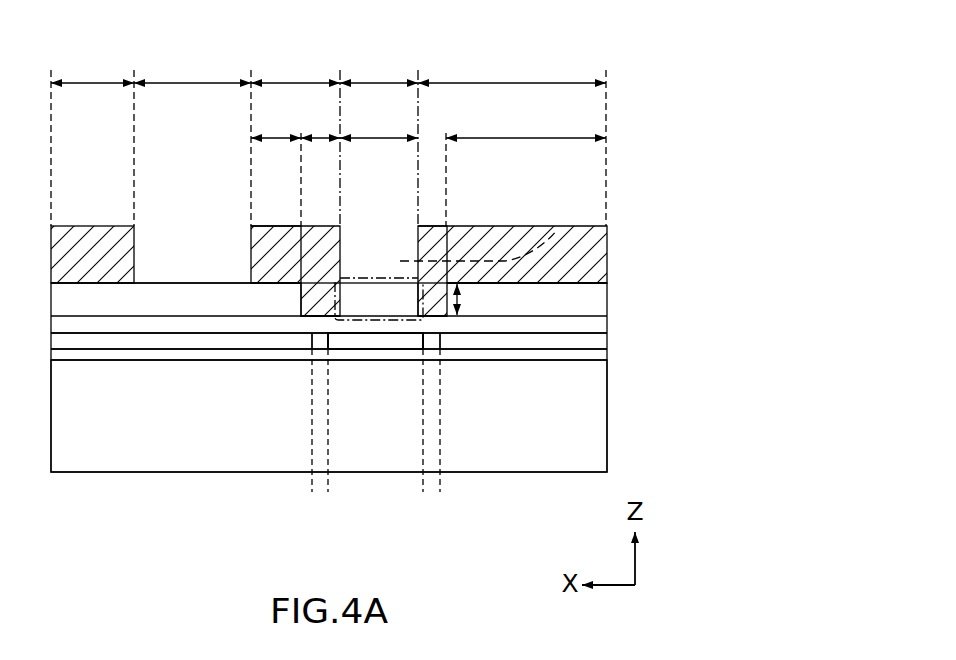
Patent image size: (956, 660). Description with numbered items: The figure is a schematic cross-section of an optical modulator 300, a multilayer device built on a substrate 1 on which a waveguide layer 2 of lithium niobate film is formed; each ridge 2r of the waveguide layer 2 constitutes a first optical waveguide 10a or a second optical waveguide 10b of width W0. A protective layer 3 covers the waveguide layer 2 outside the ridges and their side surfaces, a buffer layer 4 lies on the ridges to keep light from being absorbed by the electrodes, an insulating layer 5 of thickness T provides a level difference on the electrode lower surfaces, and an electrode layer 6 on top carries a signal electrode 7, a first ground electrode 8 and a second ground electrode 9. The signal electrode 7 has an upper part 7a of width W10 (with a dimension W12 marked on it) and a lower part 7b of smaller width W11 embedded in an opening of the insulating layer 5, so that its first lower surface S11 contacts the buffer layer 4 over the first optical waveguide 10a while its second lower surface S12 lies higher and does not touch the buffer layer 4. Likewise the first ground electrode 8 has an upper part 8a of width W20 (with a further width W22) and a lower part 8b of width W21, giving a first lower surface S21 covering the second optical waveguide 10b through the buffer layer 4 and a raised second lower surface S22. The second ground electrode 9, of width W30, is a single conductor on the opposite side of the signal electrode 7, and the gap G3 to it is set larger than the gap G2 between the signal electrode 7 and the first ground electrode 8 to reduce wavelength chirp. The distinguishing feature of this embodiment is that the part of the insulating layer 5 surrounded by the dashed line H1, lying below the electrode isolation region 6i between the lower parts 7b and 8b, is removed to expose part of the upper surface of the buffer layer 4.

The optical modulator 300 is at (473, 29).
The substrate 1 is at (607, 412).
The waveguide layer 2 is at (607, 355).
The protective layer 3 is at (607, 340).
The buffer layer 4 is at (607, 318).
The insulating layer 5 is at (607, 298).
The electrode layer 6 is at (607, 252).
The electrode isolation region 6i is at (340, 160).
The signal electrode 7 is at (290, 226).
The upper part of signal electrode 7a is at (251, 253).
The lower part of signal electrode 7b is at (300, 297).
The first ground electrode 8 is at (512, 226).
The upper part of first ground electrode 8a is at (418, 253).
The lower part of first ground electrode 8b is at (417, 300).
The second ground electrode 9 is at (93, 226).
The ridge 2r is at (311, 336).
The first optical waveguide 10a is at (281, 448).
The second optical waveguide 10b is at (471, 448).
The first lower surface of signal electrode S11 is at (312, 319).
The second lower surface of signal electrode S12 is at (275, 286).
The first lower surface of first ground electrode S21 is at (433, 319).
The second lower surface of first ground electrode S22 is at (518, 285).
The thickness of insulating layer T is at (469, 299).
The dashed line H1 is at (560, 227).
The width of optical waveguide W0 is at (285, 483).
The width of upper part of signal electrode W10 is at (295, 66).
The width of lower part of signal electrode W11 is at (324, 122).
The width of signal electrode upper part portion W12 is at (276, 122).
The width of upper part of first ground electrode W20 is at (512, 66).
The width of lower part of first ground electrode W21 is at (397, 122).
The width of upper part of first ground electrode W22 is at (526, 122).
The width of second ground electrode W30 is at (92, 66).
The gap between signal electrode and first ground electrode G2 is at (379, 66).
The gap between signal electrode and second ground electrode G3 is at (192, 66).